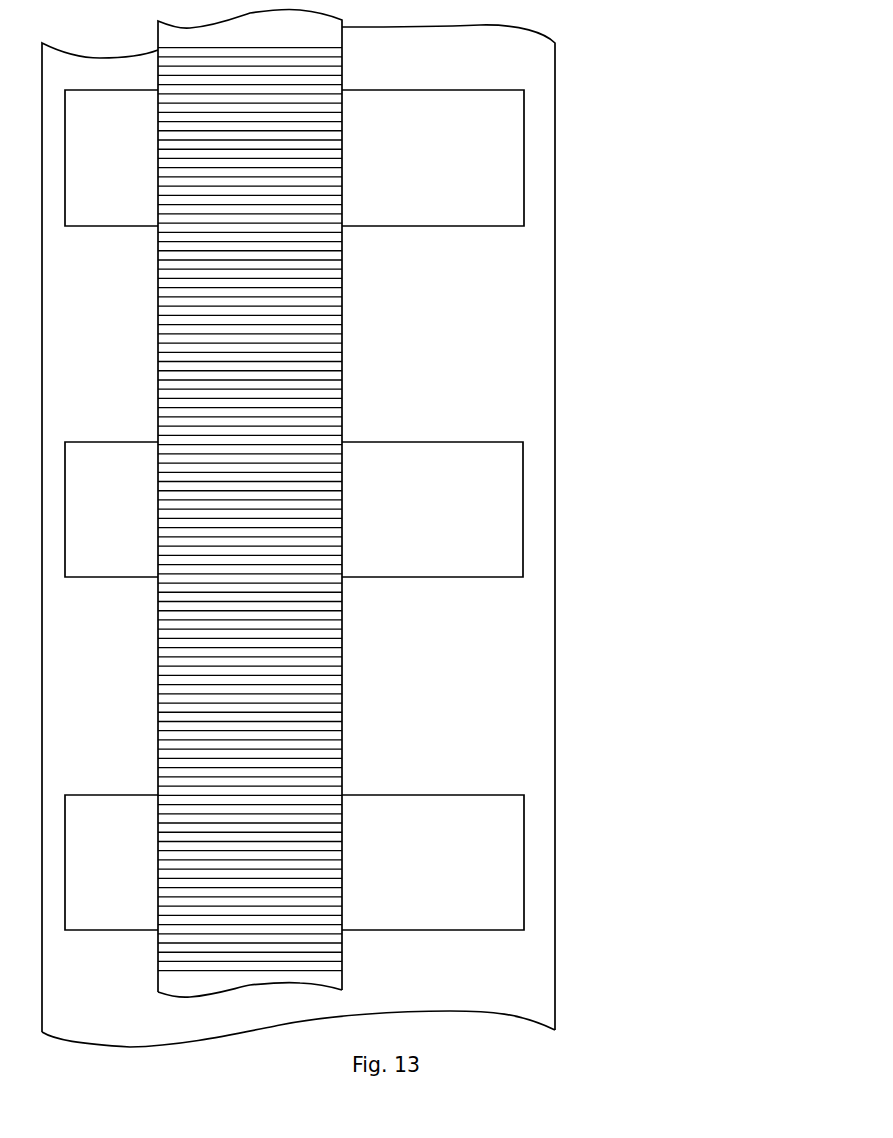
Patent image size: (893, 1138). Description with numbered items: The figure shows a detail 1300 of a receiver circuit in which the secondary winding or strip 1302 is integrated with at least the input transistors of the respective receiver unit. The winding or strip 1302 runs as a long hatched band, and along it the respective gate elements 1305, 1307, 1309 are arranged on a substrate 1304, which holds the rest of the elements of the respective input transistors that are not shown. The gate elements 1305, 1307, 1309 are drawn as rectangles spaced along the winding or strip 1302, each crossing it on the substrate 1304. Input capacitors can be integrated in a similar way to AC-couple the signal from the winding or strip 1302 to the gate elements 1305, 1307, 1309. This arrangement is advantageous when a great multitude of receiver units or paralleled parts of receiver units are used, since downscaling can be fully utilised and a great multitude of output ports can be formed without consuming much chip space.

The detail of a receiver circuit 1300 is at (483, 672).
The winding or strip 1302 is at (295, 331).
The substrate 1304 is at (483, 274).
The gate element 1305 is at (478, 180).
The gate element 1307 is at (483, 502).
The gate element 1309 is at (482, 851).